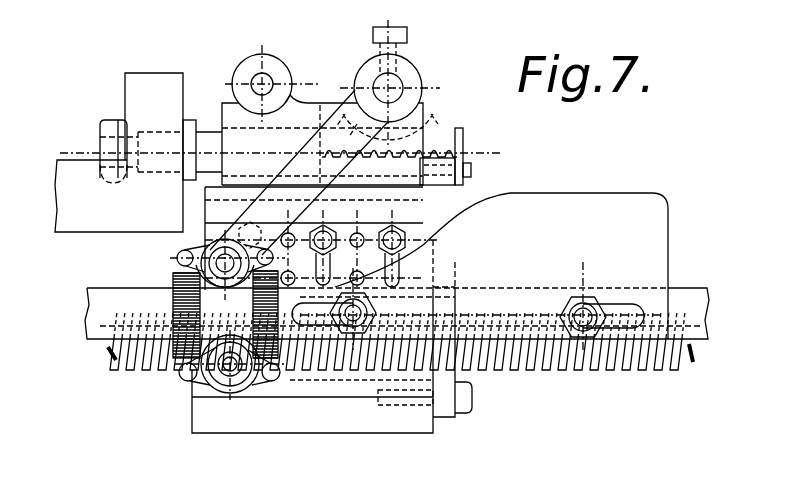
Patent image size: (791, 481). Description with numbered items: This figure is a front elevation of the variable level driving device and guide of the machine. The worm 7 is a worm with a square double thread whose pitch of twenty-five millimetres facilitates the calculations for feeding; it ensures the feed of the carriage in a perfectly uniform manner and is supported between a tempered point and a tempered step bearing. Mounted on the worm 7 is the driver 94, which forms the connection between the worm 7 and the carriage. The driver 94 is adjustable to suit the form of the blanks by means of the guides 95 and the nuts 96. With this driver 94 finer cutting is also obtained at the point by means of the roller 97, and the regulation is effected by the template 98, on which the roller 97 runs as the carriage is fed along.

The worm 7 is at (561, 358).
The driver 94 is at (301, 430).
The guides 95 is at (402, 262).
The nuts 96 is at (403, 233).
The roller 97 is at (198, 275).
The template 98 is at (493, 222).